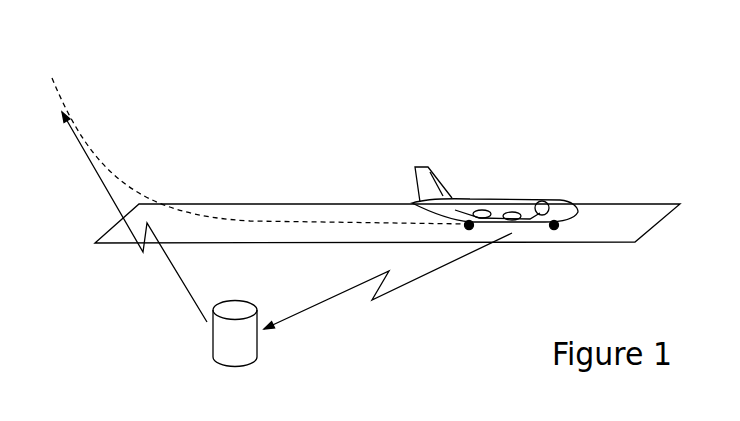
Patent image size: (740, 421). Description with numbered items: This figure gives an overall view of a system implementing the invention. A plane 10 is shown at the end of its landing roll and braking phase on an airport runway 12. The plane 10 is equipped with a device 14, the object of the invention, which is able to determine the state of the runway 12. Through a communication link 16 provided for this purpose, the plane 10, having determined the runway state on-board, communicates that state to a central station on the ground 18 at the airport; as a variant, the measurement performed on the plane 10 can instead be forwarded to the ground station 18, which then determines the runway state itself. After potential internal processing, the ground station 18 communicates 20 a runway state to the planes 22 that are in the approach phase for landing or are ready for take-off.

The plane 10 is at (492, 202).
The airport runway 12 is at (648, 211).
The device 14 is at (542, 201).
The communication link 16 is at (388, 281).
The central station on the ground 18 is at (235, 367).
The communication of runway state 20 is at (134, 217).
The planes in the approach phase 22 is at (52, 76).